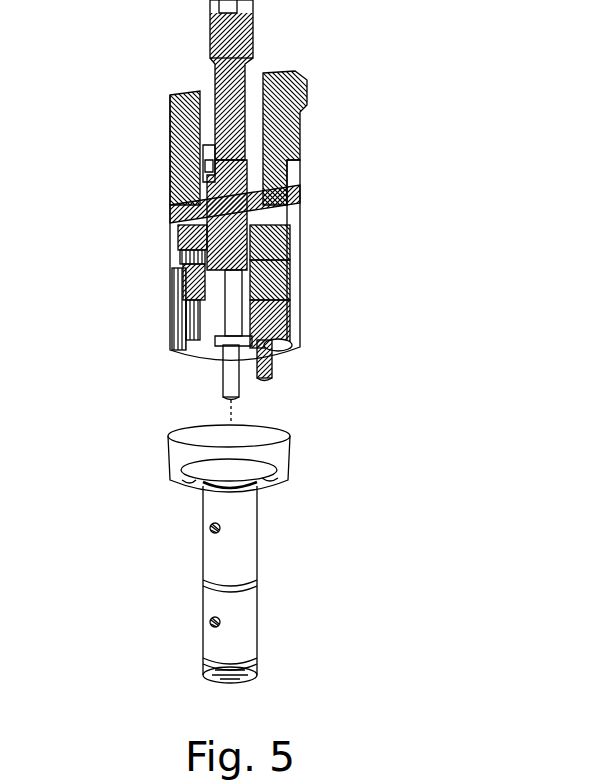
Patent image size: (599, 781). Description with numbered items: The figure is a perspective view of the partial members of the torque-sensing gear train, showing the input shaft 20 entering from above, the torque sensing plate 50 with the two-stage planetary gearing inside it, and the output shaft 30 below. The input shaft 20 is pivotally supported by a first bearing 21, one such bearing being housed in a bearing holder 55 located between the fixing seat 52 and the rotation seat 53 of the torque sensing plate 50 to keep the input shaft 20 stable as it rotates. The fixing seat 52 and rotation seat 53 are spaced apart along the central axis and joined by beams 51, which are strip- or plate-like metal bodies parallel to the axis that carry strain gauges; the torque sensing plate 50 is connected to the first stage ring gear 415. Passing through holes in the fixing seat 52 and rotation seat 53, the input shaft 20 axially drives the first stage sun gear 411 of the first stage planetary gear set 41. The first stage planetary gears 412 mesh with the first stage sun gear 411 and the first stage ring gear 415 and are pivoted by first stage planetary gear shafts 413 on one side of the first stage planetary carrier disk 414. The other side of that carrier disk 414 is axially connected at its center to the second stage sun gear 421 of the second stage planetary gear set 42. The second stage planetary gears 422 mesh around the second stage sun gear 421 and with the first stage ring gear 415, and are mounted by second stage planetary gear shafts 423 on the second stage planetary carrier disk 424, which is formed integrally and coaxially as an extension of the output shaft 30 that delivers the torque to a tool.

The input shaft 20 is at (256, 4).
The first bearing 21 is at (215, 180).
The output shaft 30 is at (225, 563).
The first stage planetary gear set 41 is at (299, 205).
The first stage sun gear 411 is at (178, 226).
The first stage planetary gears 412 is at (186, 270).
The first stage planetary gear shaft 413 is at (190, 282).
The first stage planetary carrier disk 414 is at (85, 208).
The first stage ring gear 415 is at (183, 256).
The second stage planetary gear set 42 is at (299, 246).
The second stage sun gear 421 is at (300, 330).
The second stage planetary gears 422 is at (300, 305).
The second stage planetary gear shaft 423 is at (276, 370).
The second stage planetary carrier disk 424 is at (276, 458).
The torque sensing plate 50 is at (299, 246).
The beams 51 is at (168, 135).
The fixing seat 52 is at (309, 86).
The rotation seat 53 is at (303, 200).
The bearing holder 55 is at (203, 166).